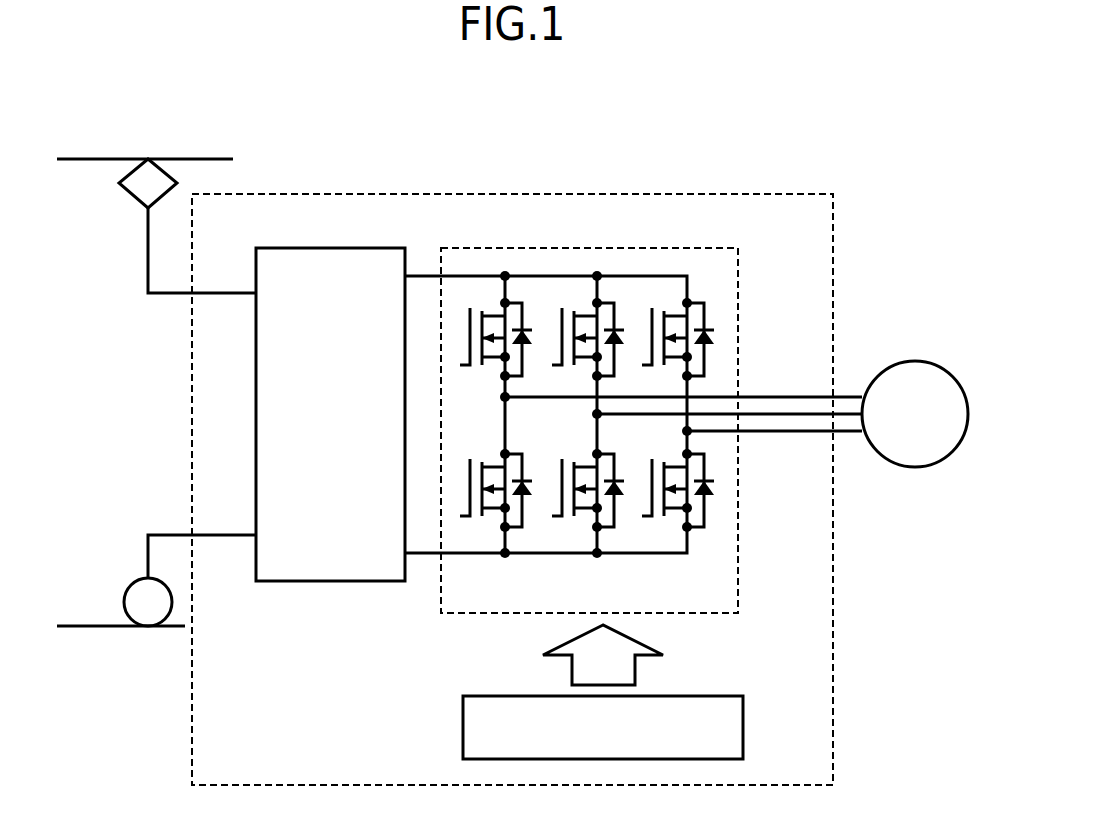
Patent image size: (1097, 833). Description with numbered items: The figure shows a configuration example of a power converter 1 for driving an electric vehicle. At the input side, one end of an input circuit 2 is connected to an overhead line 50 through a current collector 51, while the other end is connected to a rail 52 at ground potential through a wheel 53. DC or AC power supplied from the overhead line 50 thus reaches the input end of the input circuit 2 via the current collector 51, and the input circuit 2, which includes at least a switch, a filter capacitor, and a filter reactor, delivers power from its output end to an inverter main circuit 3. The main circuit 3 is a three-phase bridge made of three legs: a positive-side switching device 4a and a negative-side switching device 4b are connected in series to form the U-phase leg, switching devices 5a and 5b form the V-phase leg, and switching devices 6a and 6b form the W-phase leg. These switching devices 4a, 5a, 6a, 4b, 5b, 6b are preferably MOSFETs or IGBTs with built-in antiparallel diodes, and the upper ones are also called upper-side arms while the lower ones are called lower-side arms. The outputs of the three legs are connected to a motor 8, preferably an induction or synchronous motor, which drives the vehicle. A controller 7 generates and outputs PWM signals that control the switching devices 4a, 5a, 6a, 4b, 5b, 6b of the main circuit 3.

The power converter 1 is at (765, 194).
The input circuit 2 is at (335, 248).
The inverter main circuit 3 is at (487, 247).
The switching device 4a is at (521, 290).
The switching device 4b is at (478, 535).
The switching device 5a is at (609, 290).
The switching device 5b is at (572, 535).
The switching device 6a is at (701, 290).
The switching device 6b is at (716, 540).
The controller 7 is at (743, 726).
The motor 8 is at (914, 468).
The overhead line 50 is at (80, 159).
The current collector 51 is at (130, 198).
The rail 52 is at (122, 627).
The wheel 53 is at (133, 583).